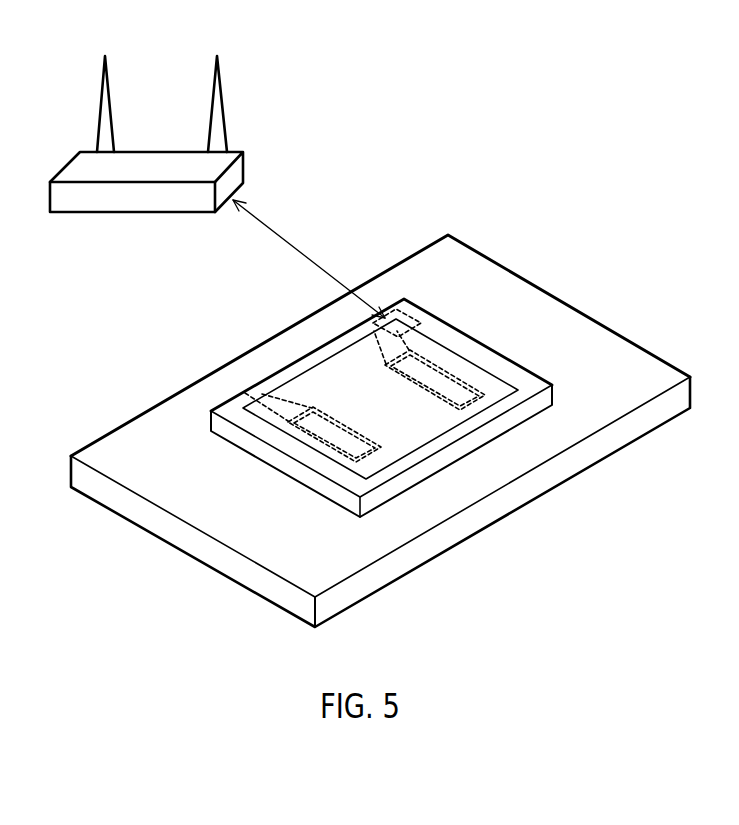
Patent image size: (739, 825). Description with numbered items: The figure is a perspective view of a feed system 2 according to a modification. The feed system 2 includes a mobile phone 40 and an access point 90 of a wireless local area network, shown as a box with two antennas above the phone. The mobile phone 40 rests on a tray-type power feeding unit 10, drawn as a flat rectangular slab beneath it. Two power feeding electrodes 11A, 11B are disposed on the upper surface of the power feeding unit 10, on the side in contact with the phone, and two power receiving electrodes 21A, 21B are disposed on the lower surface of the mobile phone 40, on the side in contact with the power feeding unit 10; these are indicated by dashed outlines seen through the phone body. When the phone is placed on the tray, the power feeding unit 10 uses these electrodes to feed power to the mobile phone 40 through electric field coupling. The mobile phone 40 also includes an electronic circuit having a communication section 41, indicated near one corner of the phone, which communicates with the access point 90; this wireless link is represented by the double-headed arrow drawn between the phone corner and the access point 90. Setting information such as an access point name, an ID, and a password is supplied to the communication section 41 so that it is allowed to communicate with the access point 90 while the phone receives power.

The feed system 2 is at (562, 240).
The power feeding unit 10 is at (438, 545).
The mobile phone 40 is at (517, 417).
The communication section 41 is at (418, 318).
The power receiving electrode 21A is at (303, 412).
The power receiving electrode 21B is at (386, 328).
The power feeding electrode 11A is at (296, 408).
The power feeding electrode 11B is at (407, 347).
The access point 90 is at (237, 62).